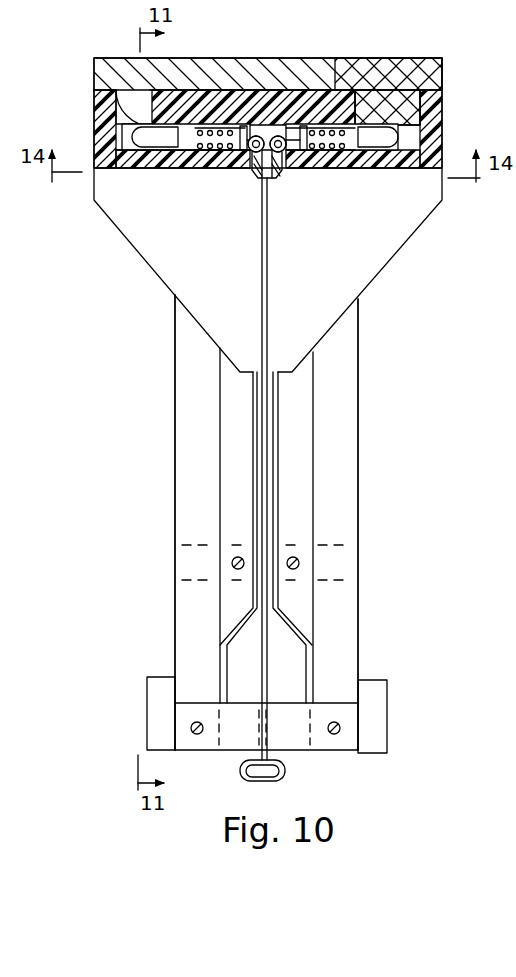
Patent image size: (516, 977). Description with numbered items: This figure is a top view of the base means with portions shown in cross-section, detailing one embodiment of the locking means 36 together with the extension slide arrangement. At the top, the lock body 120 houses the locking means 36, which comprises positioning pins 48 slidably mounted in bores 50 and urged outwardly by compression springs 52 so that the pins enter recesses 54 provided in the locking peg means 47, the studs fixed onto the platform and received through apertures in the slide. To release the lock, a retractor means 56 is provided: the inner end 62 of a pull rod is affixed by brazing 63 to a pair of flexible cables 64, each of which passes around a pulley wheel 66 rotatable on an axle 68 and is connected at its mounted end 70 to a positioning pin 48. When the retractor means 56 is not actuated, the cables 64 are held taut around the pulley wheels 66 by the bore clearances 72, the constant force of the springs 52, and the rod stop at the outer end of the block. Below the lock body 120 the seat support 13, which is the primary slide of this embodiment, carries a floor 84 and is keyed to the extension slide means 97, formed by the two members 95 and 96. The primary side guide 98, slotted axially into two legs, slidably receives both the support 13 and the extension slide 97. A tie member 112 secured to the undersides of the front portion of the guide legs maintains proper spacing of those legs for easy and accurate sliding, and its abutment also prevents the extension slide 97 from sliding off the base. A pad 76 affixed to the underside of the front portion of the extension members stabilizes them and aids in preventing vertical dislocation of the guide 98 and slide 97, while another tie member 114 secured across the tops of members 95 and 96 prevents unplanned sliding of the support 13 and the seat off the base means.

The seat support slide 13 is at (396, 240).
The locking means 36 is at (420, 176).
The locking peg means 47 is at (95, 114).
The positioning pins 48 is at (118, 90).
The bores 50 is at (168, 160).
The compression springs 52 is at (192, 165).
The recesses 54 is at (130, 160).
The retractor means 56 is at (286, 154).
The inner end of pull rod 62 is at (256, 178).
The brazing 63 is at (252, 155).
The flexible cables 64 is at (243, 90).
The pulley wheel 66 is at (258, 125).
The axle 68 is at (252, 150).
The mounted end of cable 70 is at (172, 130).
The bore clearances 72 is at (105, 162).
The pad 76 is at (388, 725).
The floor 84 is at (322, 277).
The member of extension slide means 95 is at (195, 430).
The member of extension slide means 96 is at (330, 440).
The extension slide means 97 is at (360, 488).
The primary side guide 98 is at (340, 392).
The tie member 112 is at (322, 548).
The tie member 114 is at (340, 745).
The lock body 120 is at (408, 120).